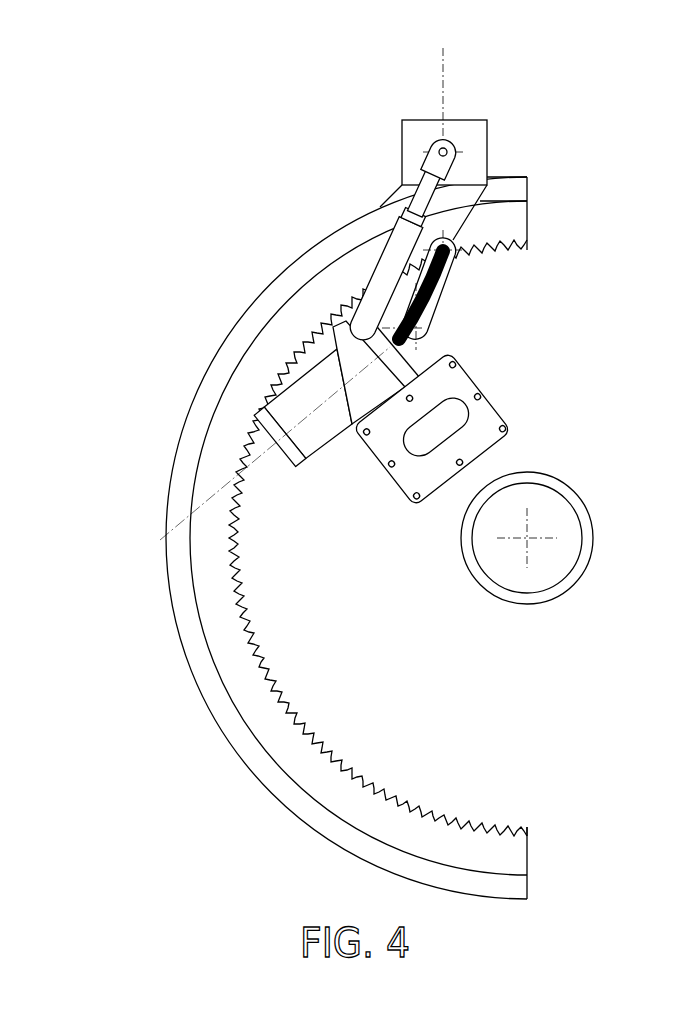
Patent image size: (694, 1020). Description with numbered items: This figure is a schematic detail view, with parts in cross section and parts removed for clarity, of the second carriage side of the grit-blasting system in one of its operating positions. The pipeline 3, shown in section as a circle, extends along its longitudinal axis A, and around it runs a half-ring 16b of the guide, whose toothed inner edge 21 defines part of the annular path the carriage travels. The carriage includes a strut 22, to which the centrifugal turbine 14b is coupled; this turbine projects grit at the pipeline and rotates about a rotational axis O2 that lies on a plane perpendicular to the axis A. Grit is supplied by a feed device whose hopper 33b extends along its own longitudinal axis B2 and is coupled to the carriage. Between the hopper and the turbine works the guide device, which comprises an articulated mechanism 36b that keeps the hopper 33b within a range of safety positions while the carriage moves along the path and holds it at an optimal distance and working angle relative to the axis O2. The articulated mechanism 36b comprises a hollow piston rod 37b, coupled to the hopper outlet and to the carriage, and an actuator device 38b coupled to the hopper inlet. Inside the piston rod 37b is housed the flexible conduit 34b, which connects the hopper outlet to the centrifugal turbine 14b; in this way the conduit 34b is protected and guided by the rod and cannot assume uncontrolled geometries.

The half-ring 16b is at (212, 363).
The articulated mechanism 36b is at (318, 278).
The toothed inner edge 21 is at (499, 818).
The hopper 33b is at (457, 150).
The longitudinal axis B2 is at (445, 72).
The centrifugal turbine 14b is at (308, 473).
The strut 22 is at (484, 415).
The conduit 34b is at (431, 302).
The piston rod 37b is at (448, 288).
The actuator device 38b is at (381, 256).
The pipeline 3 is at (585, 496).
The longitudinal axis A is at (527, 538).
The rotational axis O2 is at (180, 516).